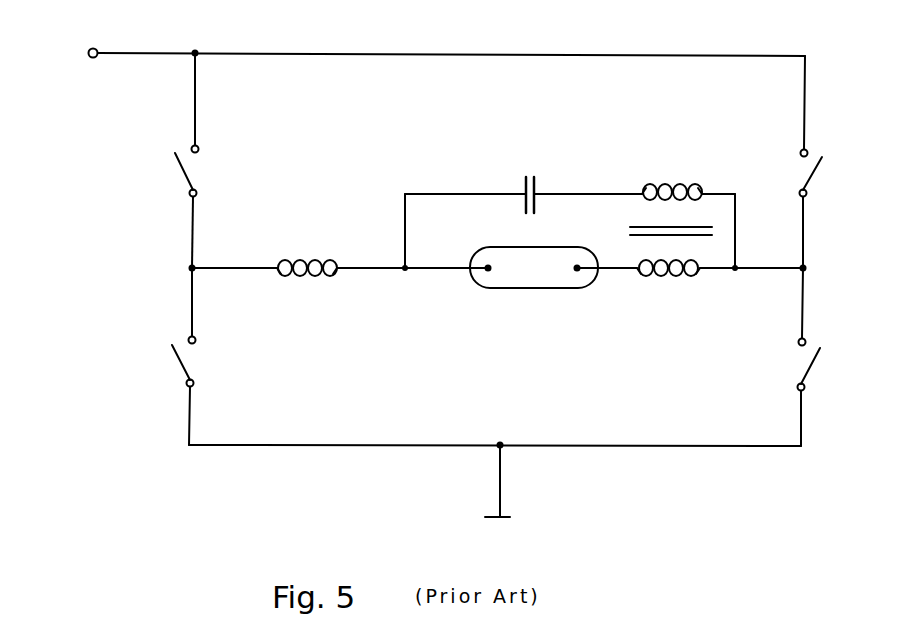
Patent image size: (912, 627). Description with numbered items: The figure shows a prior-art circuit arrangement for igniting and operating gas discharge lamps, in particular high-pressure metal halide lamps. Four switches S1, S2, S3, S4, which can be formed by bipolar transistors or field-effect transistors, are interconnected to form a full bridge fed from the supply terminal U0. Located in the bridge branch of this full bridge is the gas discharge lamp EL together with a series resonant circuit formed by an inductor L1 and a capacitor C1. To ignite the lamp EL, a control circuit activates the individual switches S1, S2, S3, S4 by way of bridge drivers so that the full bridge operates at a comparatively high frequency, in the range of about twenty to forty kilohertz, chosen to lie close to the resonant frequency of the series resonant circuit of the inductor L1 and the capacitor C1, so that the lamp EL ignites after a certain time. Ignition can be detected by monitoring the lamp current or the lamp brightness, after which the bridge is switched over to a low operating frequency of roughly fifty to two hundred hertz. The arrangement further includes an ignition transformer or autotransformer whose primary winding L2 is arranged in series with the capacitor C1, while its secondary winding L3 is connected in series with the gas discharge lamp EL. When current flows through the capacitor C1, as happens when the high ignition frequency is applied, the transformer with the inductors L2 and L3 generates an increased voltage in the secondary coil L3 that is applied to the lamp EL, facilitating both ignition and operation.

The supply voltage terminal U0 is at (82, 53).
The switch S1 is at (184, 173).
The switch S2 is at (180, 365).
The switch S3 is at (817, 179).
The switch S4 is at (812, 367).
The inductor L1 is at (310, 276).
The primary winding L2 is at (675, 185).
The secondary winding L3 is at (667, 279).
The capacitor C1 is at (530, 176).
The gas discharge lamp EL is at (532, 291).